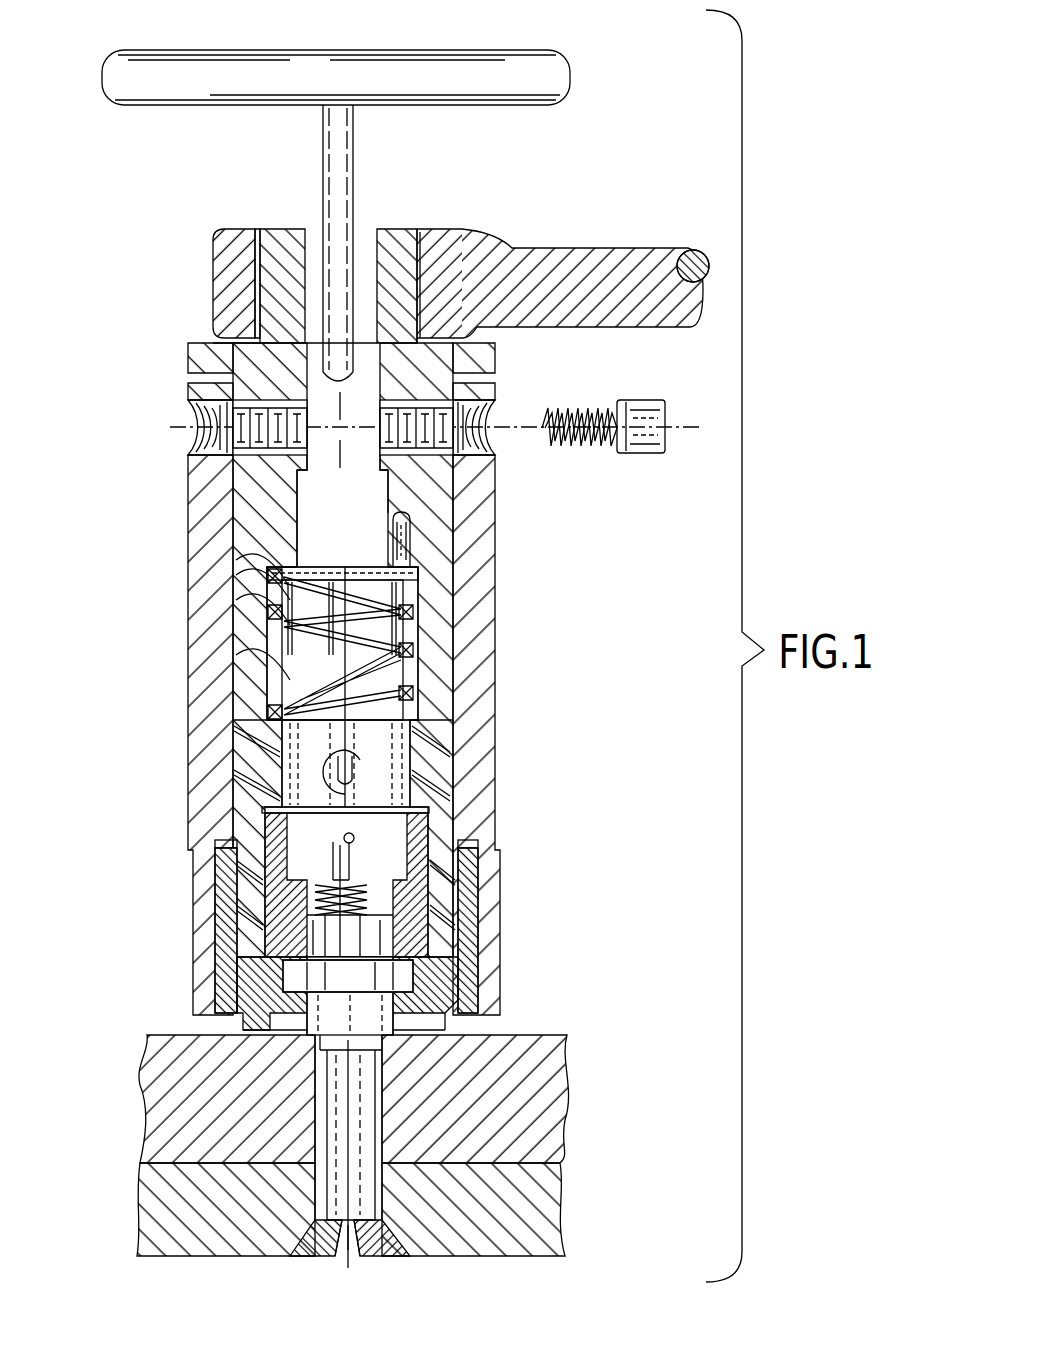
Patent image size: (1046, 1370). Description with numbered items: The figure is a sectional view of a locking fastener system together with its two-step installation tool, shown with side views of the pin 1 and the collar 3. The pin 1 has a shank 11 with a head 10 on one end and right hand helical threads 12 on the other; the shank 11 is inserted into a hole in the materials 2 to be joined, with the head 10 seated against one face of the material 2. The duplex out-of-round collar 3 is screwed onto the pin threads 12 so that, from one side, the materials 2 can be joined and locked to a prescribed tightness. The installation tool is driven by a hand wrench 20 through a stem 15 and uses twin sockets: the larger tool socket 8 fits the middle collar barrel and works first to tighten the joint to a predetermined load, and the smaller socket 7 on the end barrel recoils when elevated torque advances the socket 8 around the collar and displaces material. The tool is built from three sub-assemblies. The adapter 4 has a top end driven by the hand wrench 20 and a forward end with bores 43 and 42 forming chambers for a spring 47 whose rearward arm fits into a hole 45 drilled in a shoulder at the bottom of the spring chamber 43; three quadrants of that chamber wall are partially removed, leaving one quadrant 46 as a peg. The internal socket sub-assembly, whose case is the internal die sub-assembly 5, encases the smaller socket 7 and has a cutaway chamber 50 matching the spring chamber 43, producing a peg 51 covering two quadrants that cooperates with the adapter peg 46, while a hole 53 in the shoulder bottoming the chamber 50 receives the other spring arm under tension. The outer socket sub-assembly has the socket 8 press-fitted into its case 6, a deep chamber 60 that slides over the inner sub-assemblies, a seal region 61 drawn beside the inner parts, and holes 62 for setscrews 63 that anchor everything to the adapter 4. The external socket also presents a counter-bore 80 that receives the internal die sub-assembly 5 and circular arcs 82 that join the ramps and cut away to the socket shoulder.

The pin 1 is at (330, 1200).
The materials 2 is at (560, 1077).
The collar 3 is at (318, 885).
The adapter 4 is at (283, 248).
The internal die sub-assembly 5 is at (495, 693).
The case 6 is at (206, 705).
The smaller socket 7 is at (430, 835).
The larger tool socket 8 is at (460, 980).
The head 10 is at (345, 1232).
The shank 11 is at (400, 1240).
The helical threads 12 is at (365, 900).
The stem 15 is at (354, 171).
The hand wrench 20 is at (652, 262).
The bore 42 is at (388, 504).
The spring chamber 43 is at (262, 548).
The hole 45 is at (412, 518).
The peg 46 is at (248, 712).
The spring 47 is at (325, 575).
The cutaway chamber 50 is at (430, 680).
The peg 51 is at (420, 655).
The hole 53 is at (350, 793).
The deep chamber 60 is at (432, 760).
The seal 61 is at (463, 905).
The holes 62 is at (198, 427).
The setscrews 63 is at (630, 450).
The counter-bore 80 is at (232, 865).
The circular arcs 82 is at (596, 985).